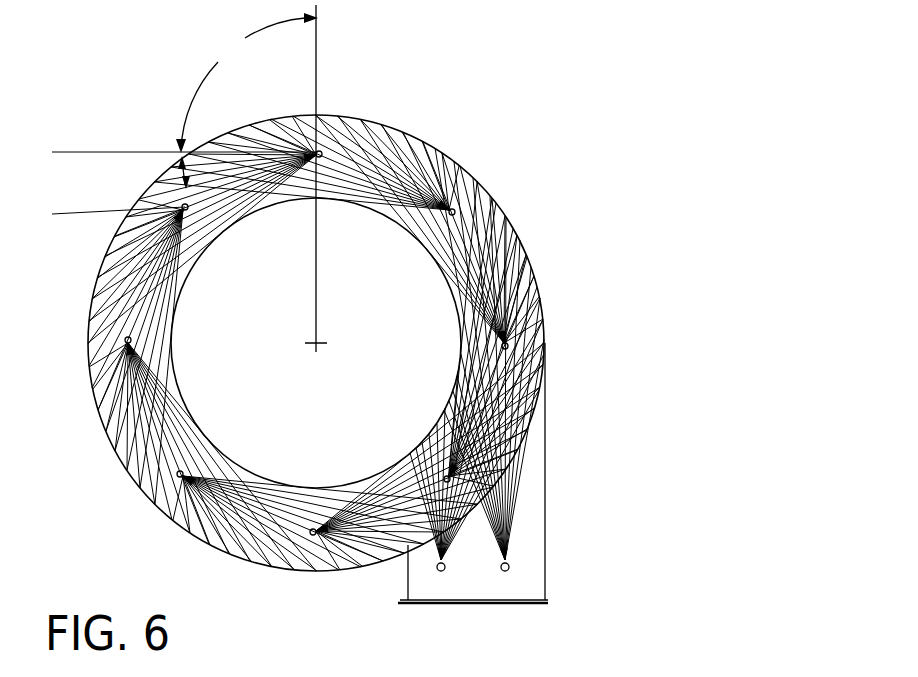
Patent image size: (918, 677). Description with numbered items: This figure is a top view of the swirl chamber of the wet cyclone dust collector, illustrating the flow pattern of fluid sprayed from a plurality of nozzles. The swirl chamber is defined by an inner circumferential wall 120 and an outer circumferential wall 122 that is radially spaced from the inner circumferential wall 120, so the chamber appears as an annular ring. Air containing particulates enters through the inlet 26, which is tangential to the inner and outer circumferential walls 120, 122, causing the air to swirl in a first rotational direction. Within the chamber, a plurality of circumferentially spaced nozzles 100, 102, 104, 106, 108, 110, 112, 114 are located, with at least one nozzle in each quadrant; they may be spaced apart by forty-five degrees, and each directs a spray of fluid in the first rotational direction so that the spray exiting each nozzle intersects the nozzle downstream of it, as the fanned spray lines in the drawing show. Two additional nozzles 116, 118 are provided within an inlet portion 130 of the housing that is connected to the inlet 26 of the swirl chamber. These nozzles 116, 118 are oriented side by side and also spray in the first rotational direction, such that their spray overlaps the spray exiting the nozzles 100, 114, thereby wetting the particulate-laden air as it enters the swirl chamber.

The inlet 26 is at (408, 552).
The nozzle 100 is at (452, 478).
The nozzle 102 is at (507, 341).
The nozzle 104 is at (452, 211).
The nozzle 106 is at (319, 152).
The nozzle 108 is at (183, 210).
The nozzle 110 is at (126, 342).
The nozzle 112 is at (181, 478).
The nozzle 114 is at (314, 534).
The nozzle 116 is at (441, 571).
The nozzle 118 is at (505, 571).
The inner circumferential wall 120 is at (197, 416).
The outer circumferential wall 122 is at (110, 448).
The inlet portion 130 is at (546, 566).